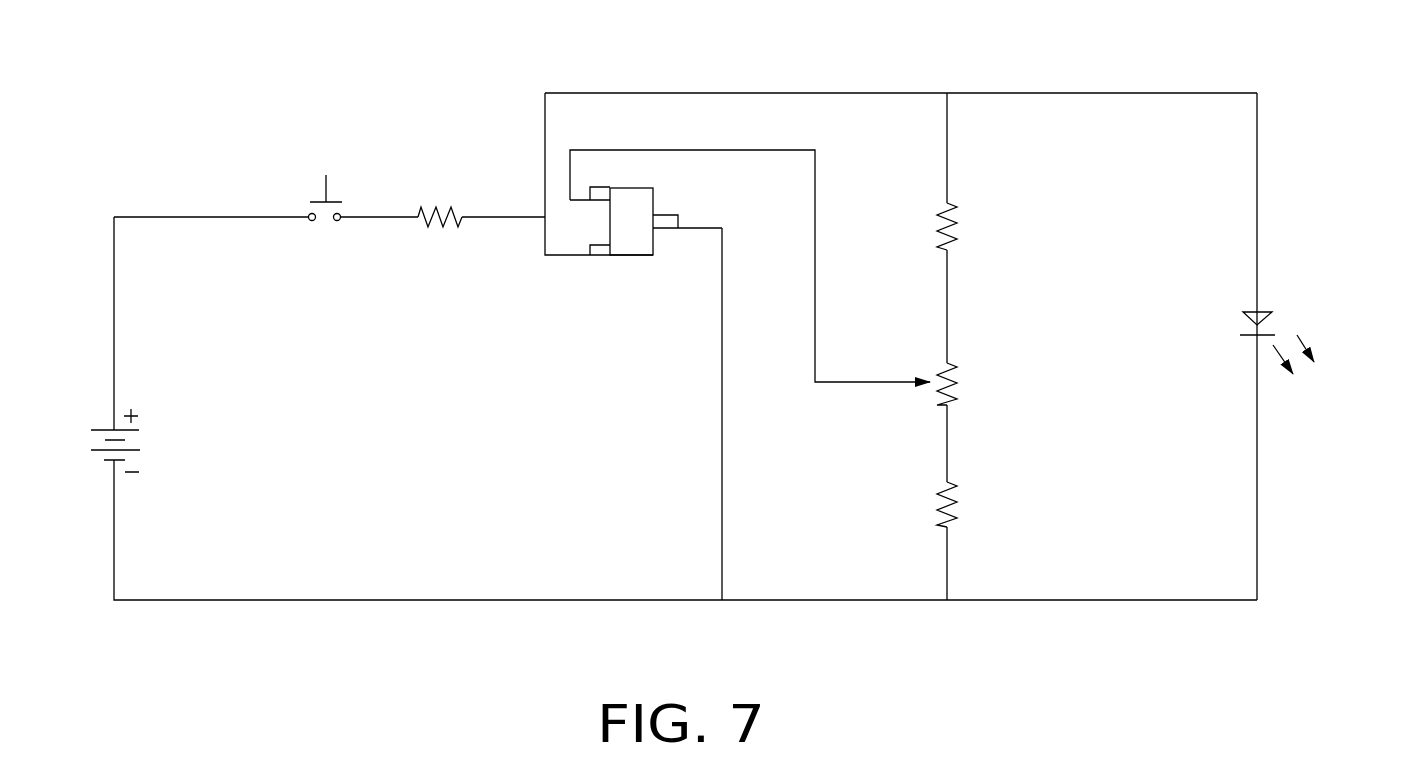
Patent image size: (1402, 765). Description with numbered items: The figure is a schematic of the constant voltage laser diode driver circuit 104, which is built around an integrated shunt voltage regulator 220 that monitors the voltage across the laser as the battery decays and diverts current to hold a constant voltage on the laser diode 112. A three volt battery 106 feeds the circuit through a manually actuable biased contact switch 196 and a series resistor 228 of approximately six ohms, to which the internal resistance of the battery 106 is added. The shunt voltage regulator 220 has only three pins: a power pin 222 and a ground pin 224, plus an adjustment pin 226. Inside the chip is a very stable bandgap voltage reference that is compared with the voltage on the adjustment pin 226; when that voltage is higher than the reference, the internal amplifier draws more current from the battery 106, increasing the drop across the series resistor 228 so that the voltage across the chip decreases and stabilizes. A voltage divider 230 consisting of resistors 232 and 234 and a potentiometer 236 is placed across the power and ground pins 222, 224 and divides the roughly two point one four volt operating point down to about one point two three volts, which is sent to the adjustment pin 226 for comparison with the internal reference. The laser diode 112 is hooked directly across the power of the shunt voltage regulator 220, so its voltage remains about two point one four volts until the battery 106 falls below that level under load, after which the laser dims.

The laser diode driver circuit 104 is at (478, 623).
The battery 106 is at (143, 399).
The laser diode 112 is at (1362, 368).
The manually actuable biased contact switch 196 is at (313, 191).
The integrated shunt voltage regulator 220 is at (660, 186).
The power pin 222 is at (600, 253).
The ground pin 224 is at (667, 226).
The adjustment pin 226 is at (590, 197).
The series resistor 228 is at (432, 297).
The voltage divider 230 is at (1000, 303).
The resistor 232 is at (957, 202).
The resistor 234 is at (957, 527).
The potentiometer 236 is at (960, 403).